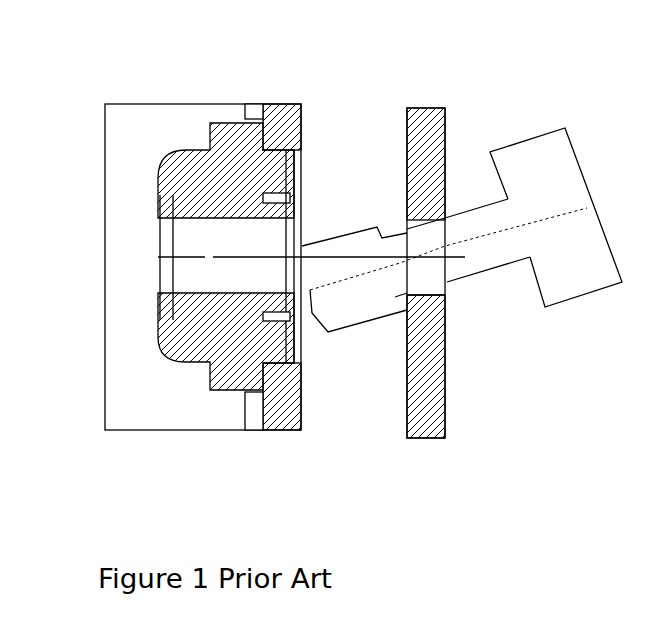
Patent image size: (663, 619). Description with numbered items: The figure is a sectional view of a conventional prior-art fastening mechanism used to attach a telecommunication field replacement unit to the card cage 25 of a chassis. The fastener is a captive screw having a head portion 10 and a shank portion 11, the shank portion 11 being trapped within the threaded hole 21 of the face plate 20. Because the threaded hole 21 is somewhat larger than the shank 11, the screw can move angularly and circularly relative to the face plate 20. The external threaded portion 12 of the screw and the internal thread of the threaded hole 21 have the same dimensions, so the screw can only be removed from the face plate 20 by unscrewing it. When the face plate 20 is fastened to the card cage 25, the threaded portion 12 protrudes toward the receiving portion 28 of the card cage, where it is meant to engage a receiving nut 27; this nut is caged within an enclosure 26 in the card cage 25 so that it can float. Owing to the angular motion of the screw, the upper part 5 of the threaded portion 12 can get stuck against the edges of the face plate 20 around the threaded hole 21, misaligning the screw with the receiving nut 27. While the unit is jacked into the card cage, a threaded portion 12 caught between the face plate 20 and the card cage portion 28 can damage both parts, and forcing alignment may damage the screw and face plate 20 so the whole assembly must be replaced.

The upper part of the threaded portion 5 is at (403, 297).
The head portion 10 is at (548, 130).
The shank portion 11 is at (458, 215).
The external threaded portion 12 is at (343, 233).
The face plate 20 is at (425, 108).
The threaded hole 21 is at (447, 288).
The card cage 25 is at (205, 432).
The enclosure 26 is at (162, 350).
The receiving nut 27 is at (192, 249).
The receiving portion of the card cage 28 is at (302, 340).